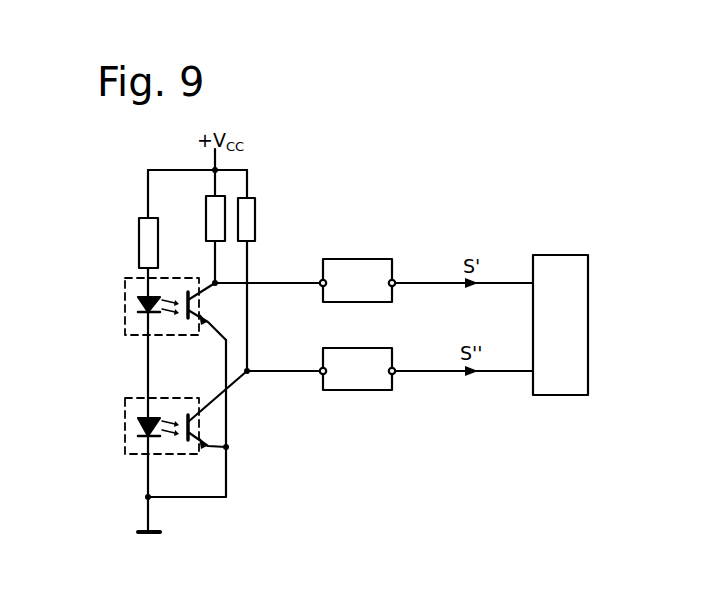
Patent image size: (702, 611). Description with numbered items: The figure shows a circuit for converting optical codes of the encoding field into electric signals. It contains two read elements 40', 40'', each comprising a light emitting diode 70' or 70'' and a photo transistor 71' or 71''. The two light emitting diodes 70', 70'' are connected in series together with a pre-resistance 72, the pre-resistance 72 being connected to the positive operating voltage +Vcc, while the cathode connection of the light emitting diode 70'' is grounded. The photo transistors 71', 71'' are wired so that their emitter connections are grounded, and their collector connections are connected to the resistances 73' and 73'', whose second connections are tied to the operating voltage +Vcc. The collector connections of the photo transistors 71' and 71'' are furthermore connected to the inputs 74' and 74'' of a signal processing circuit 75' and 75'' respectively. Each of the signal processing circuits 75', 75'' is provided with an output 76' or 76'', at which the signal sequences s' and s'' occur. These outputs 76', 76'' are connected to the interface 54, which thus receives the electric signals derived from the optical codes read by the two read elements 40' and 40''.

The pre-resistance 72 is at (147, 231).
The resistance 73' is at (198, 226).
The resistance 73'' is at (274, 270).
The read element 40' is at (151, 322).
The light emitting diode 70' is at (128, 311).
The photo transistor 71' is at (198, 326).
The read element 40'' is at (162, 430).
The light emitting diode 70'' is at (128, 435).
The photo transistor 71'' is at (208, 430).
The input 74' is at (310, 257).
The signal processing circuit 75' is at (385, 286).
The output 76' is at (406, 257).
The input 74'' is at (308, 347).
The signal processing circuit 75'' is at (387, 374).
The output 76'' is at (409, 347).
The interface 54 is at (556, 384).